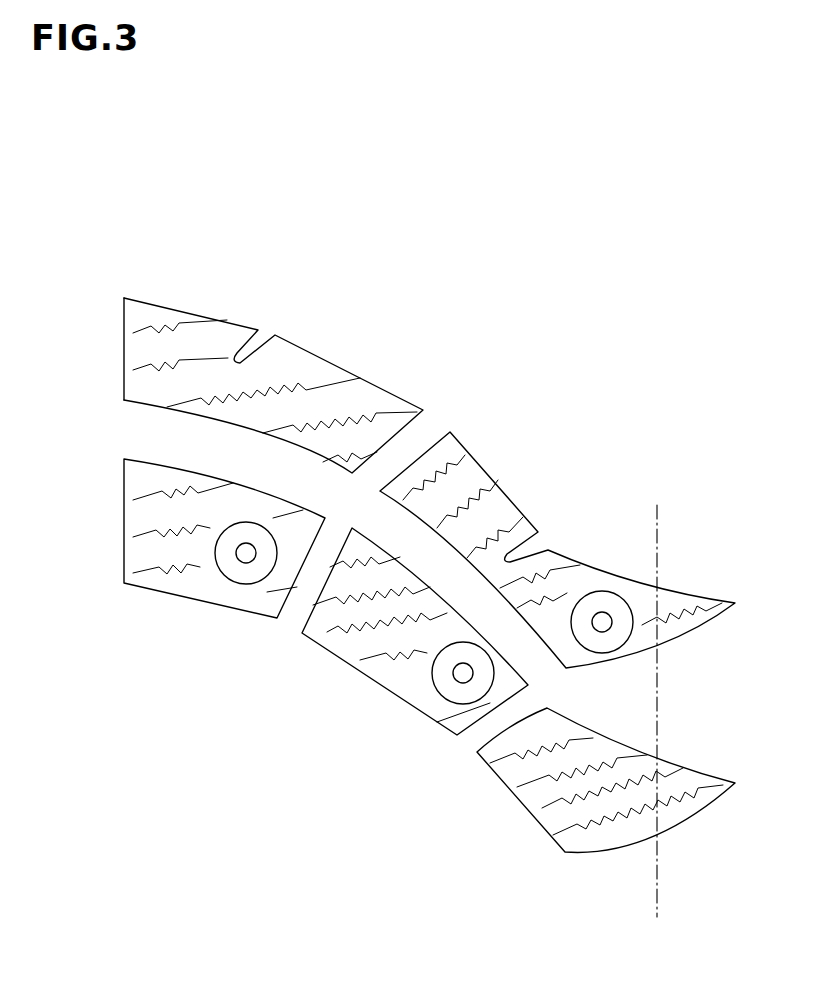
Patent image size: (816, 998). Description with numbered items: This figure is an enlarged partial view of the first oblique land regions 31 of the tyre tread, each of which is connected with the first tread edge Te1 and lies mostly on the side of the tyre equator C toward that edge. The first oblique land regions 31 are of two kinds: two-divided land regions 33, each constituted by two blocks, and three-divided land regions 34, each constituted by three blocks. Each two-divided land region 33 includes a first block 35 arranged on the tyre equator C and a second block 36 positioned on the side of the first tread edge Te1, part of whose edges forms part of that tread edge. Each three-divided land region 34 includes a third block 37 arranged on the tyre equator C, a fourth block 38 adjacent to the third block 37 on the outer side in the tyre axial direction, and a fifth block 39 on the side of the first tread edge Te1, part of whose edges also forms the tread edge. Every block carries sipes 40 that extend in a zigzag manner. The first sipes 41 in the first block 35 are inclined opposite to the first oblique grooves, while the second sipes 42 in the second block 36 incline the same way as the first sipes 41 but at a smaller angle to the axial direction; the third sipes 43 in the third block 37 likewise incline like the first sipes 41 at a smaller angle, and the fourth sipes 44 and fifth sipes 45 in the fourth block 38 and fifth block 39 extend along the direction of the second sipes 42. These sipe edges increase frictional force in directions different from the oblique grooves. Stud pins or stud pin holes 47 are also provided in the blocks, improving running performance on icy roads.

The first tread edge Te1 is at (124, 319).
The first oblique land region 31 is at (418, 368).
The two-divided land region 33 is at (239, 357).
The three-divided land region 34 is at (423, 635).
The first block 35 is at (501, 513).
The second block 36 is at (290, 364).
The third block 37 is at (560, 799).
The fourth block 38 is at (409, 648).
The fifth block 39 is at (184, 554).
The sipe 40 is at (465, 503).
The first sipe 41 is at (557, 550).
The second sipe 42 is at (308, 387).
The third sipe 43 is at (610, 817).
The fourth sipe 44 is at (362, 585).
The fifth sipe 45 is at (212, 530).
The stud pin or stud pin hole 47 is at (247, 553).
The tyre equator C is at (656, 699).